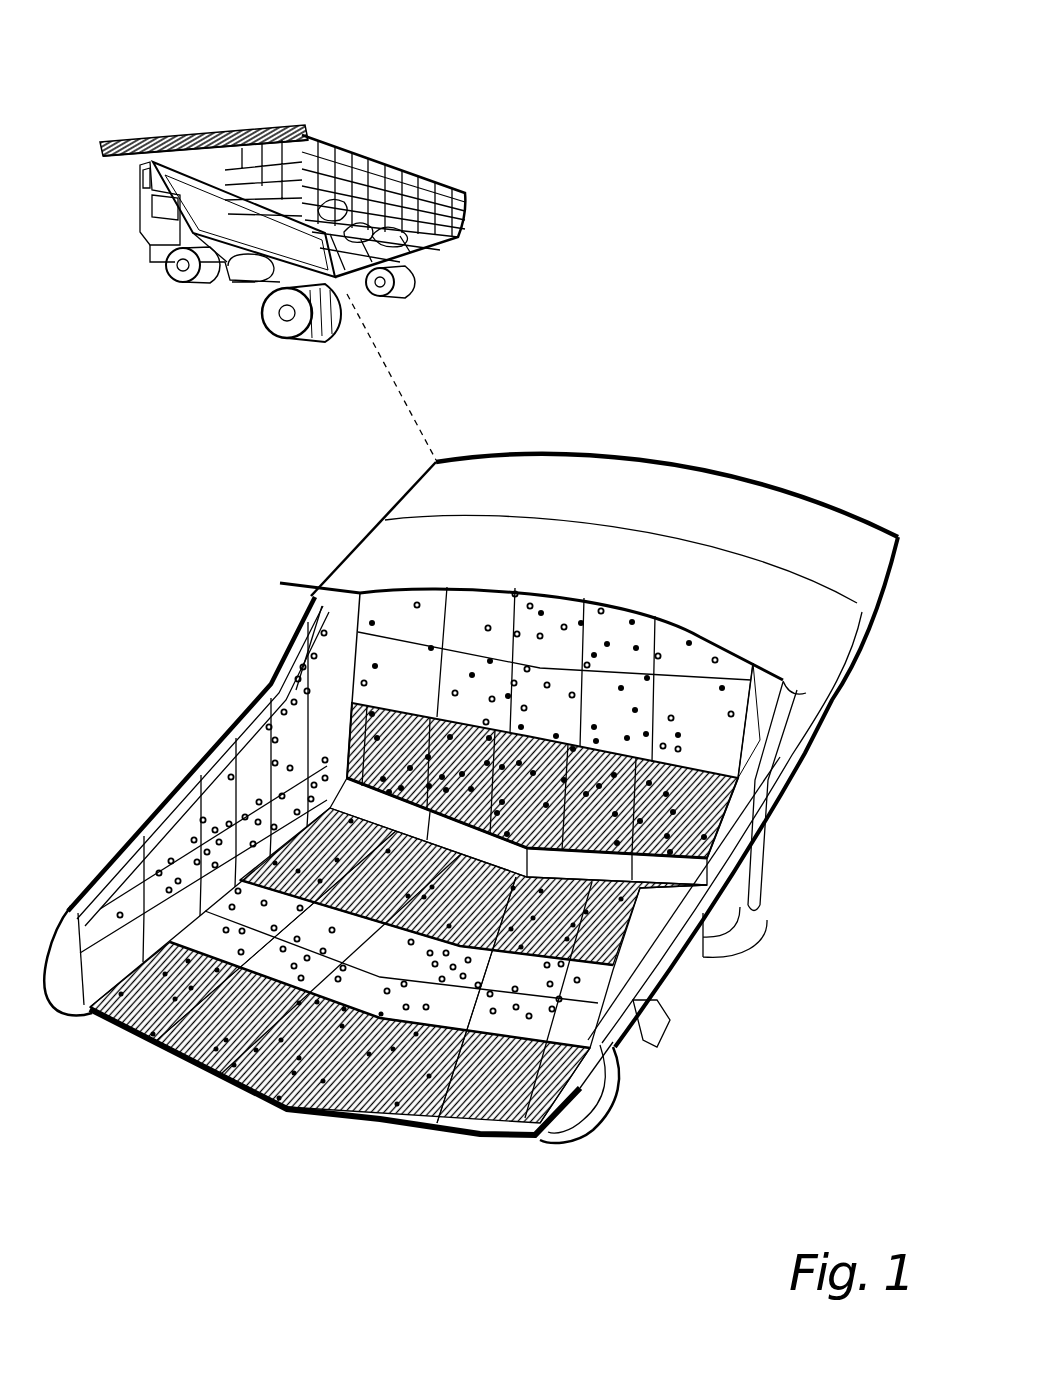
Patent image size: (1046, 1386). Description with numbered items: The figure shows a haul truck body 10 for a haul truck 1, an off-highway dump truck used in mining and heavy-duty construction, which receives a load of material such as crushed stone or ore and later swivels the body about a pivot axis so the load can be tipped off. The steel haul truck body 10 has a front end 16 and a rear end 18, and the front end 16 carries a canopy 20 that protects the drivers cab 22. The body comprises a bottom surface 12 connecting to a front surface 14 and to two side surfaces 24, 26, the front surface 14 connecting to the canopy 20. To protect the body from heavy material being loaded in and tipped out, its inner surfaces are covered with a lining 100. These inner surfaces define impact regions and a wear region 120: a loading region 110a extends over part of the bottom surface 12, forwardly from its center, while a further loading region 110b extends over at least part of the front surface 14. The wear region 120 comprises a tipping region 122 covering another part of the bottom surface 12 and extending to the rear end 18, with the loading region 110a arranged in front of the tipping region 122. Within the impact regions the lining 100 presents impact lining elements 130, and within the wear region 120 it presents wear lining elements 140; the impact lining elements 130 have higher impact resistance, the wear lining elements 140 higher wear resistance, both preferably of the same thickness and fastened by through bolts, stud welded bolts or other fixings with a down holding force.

The haul truck 1 is at (272, 231).
The drivers cab 22 is at (136, 222).
The haul truck body 10 is at (312, 481).
The front end 16 is at (672, 453).
The canopy 20 is at (584, 492).
The front surface 14 is at (612, 652).
The lining 100 is at (413, 619).
The further loading region 110b is at (372, 733).
The loading region 110a is at (322, 835).
The side surface 26 is at (218, 808).
The impact lining elements 130 is at (588, 917).
The side surface 24 is at (612, 1002).
The bottom surface 12 is at (480, 948).
The wear lining elements 140 is at (282, 1060).
The rear end 18 is at (275, 1127).
The tipping region 122 is at (323, 1068).
The wear region 120 is at (465, 1103).